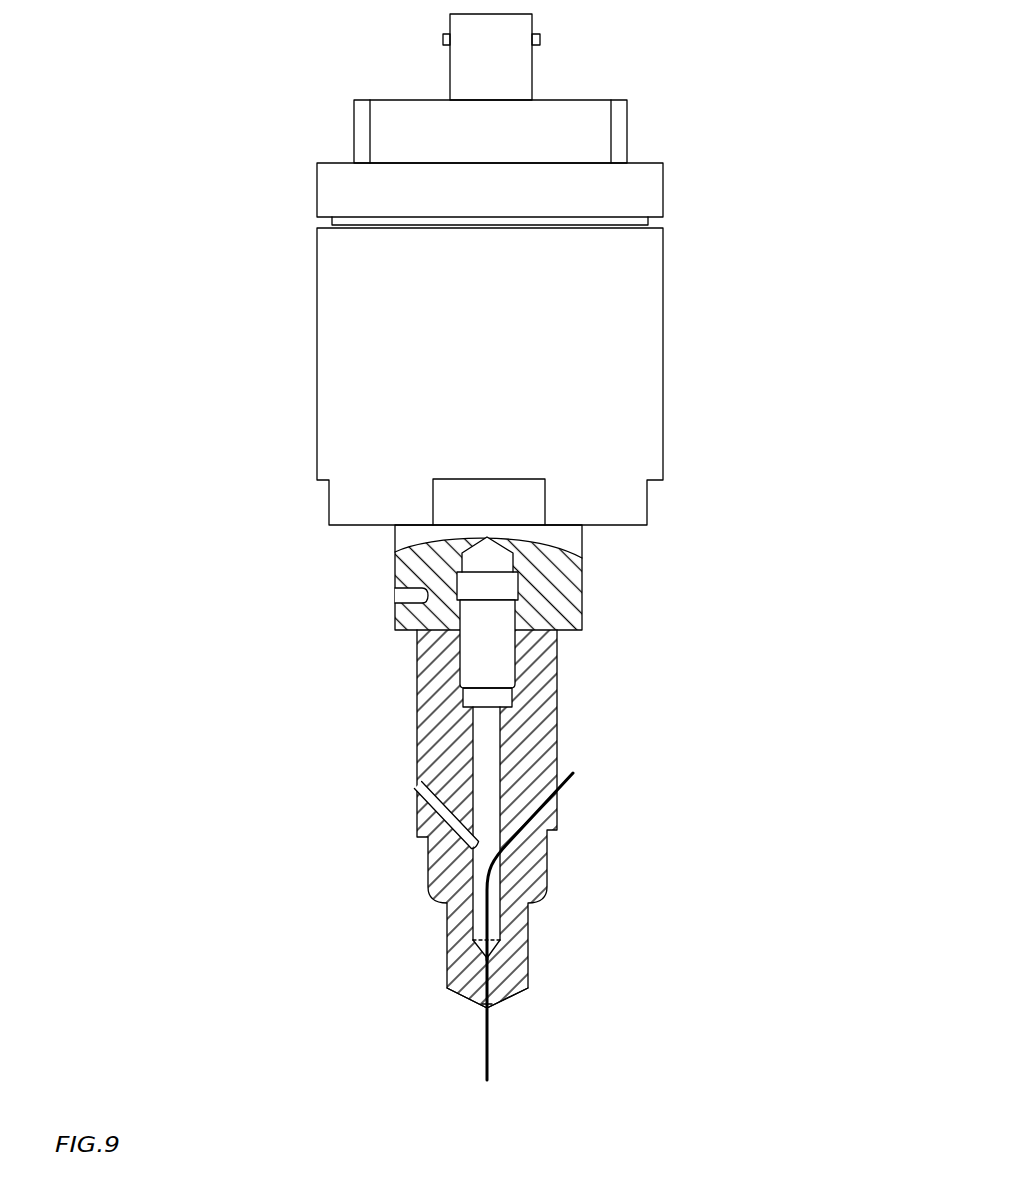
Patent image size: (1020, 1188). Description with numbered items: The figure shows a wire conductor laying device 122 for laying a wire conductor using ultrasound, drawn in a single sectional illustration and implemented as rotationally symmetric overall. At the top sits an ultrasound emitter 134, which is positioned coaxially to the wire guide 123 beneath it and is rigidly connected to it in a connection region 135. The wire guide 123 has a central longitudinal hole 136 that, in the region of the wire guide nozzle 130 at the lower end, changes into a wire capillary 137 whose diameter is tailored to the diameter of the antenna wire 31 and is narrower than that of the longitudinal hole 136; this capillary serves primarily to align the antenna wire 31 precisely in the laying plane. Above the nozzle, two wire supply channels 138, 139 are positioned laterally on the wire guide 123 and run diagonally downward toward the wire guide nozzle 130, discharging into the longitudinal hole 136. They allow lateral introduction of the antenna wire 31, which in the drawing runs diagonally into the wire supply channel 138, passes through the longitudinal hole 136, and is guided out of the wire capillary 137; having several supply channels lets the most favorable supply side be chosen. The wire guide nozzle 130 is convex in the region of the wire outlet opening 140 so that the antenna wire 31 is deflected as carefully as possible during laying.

The wire conductor laying device 122 is at (705, 243).
The ultrasound emitter 134 is at (617, 390).
The connection region 135 is at (585, 577).
The central longitudinal hole 136 is at (482, 740).
The wire supply channel 138 is at (548, 825).
The wire supply channel 139 is at (433, 825).
The wire guide 123 is at (537, 932).
The wire capillary 137 is at (485, 973).
The wire outlet opening 140 is at (498, 1015).
The wire guide nozzle 130 is at (487, 990).
The antenna wire 31 is at (497, 1070).